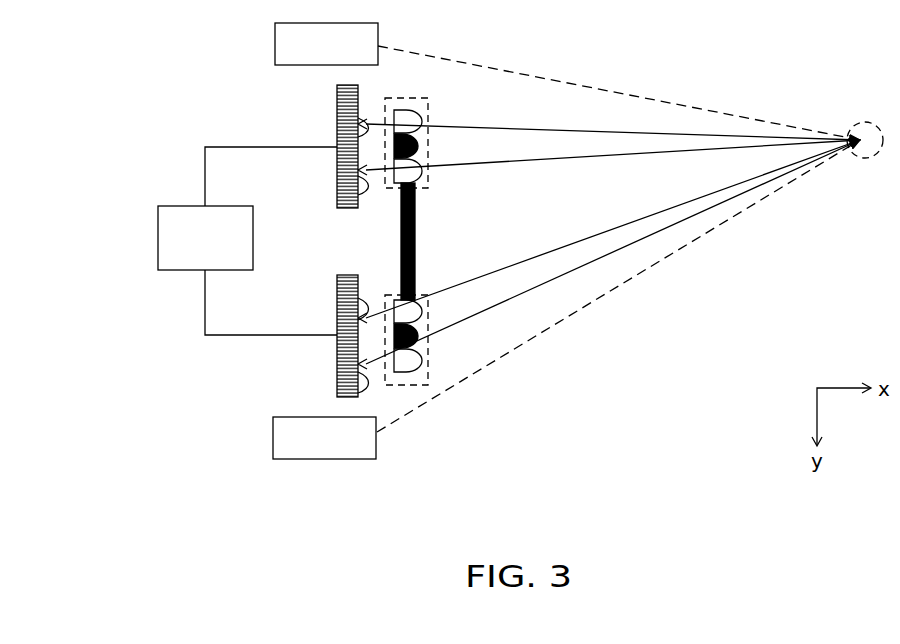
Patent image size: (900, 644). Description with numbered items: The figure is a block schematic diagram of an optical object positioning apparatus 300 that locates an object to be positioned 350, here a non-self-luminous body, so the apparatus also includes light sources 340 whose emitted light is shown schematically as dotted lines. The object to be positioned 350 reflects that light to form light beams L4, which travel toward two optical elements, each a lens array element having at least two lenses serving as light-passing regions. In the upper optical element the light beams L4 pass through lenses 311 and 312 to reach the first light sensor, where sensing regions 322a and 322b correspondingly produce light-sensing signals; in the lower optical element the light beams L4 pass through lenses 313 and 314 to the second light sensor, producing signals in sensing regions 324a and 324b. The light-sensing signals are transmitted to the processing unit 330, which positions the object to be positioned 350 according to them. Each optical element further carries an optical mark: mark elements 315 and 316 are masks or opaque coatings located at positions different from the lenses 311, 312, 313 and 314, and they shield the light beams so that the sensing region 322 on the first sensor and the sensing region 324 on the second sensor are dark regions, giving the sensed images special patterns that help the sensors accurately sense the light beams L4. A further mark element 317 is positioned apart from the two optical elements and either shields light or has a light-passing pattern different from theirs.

The optical object positioning apparatus 300 is at (470, 490).
The lens 311 is at (421, 113).
The lens 312 is at (421, 181).
The lens 313 is at (421, 308).
The lens 314 is at (420, 366).
The mark element 315 is at (419, 147).
The mark element 316 is at (419, 336).
The mark element 317 is at (415, 240).
The sensing region 322 is at (360, 147).
The sensing region 322a is at (357, 132).
The sensing region 322b is at (357, 190).
The sensing region 324 is at (360, 343).
The sensing region 324a is at (357, 308).
The sensing region 324b is at (368, 376).
The processing unit 330 is at (158, 238).
The light source 340 is at (275, 45).
The object to be positioned 350 is at (866, 118).
The light beam L4 is at (532, 126).